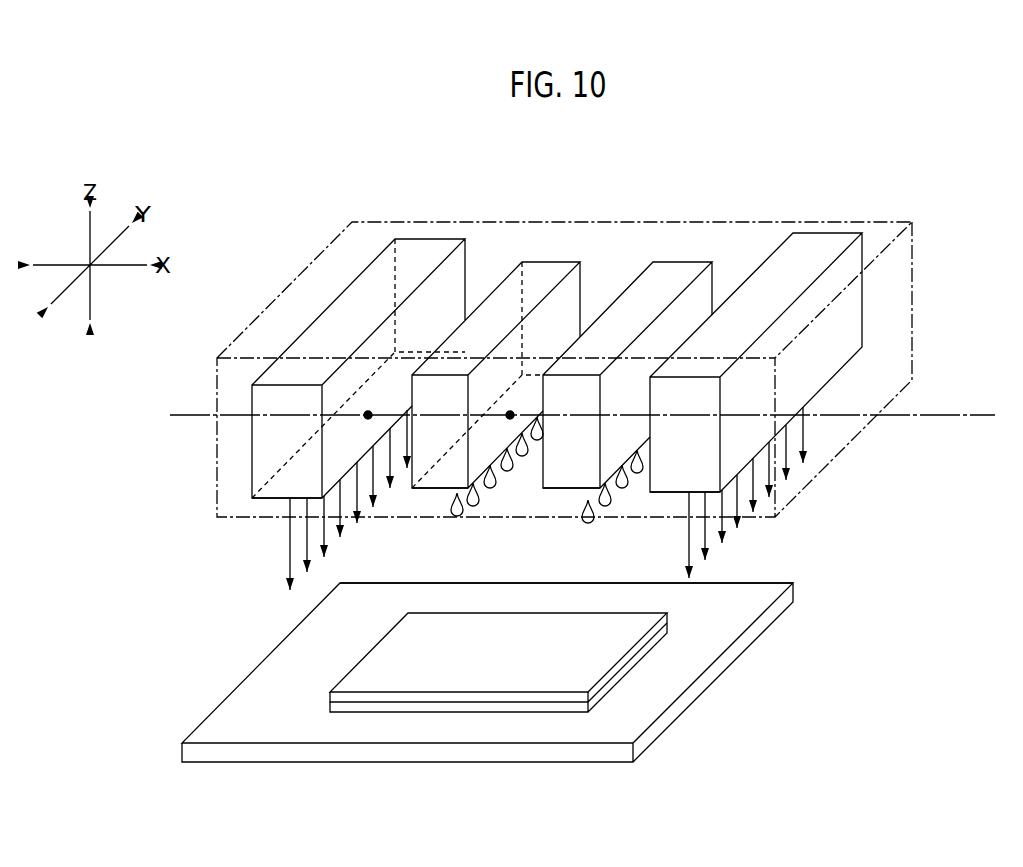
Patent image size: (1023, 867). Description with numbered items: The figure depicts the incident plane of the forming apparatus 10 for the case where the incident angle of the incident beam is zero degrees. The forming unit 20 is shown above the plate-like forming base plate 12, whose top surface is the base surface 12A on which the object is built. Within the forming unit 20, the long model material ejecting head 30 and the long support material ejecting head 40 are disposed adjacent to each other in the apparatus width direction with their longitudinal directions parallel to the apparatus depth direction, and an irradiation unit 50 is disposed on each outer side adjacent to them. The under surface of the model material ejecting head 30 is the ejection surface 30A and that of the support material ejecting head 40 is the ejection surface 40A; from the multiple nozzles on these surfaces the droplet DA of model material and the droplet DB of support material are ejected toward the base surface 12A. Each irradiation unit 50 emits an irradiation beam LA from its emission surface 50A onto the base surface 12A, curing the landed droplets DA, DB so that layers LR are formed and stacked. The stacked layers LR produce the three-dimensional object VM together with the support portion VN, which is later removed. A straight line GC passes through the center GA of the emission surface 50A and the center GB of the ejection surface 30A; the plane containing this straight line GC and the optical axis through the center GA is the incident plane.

The forming apparatus 10 is at (985, 170).
The forming unit 20 is at (912, 300).
The straight line GC is at (963, 413).
The irradiation unit 50 is at (428, 240).
The model material ejecting head 30 is at (548, 262).
The support material ejecting head 40 is at (680, 262).
The center of emission surface GA is at (368, 411).
The center of ejection surface GB is at (510, 411).
The emission surface 50A is at (274, 498).
The ejection surface 30A is at (446, 488).
The ejection surface 40A is at (575, 488).
The irradiation beam LA is at (307, 543).
The droplet of model material DA is at (460, 516).
The droplet of support material DB is at (592, 522).
The forming base plate 12 is at (780, 607).
The base surface 12A is at (717, 640).
The support portion VN is at (587, 672).
The three-dimensional object VM is at (413, 698).
The layers LR is at (573, 707).